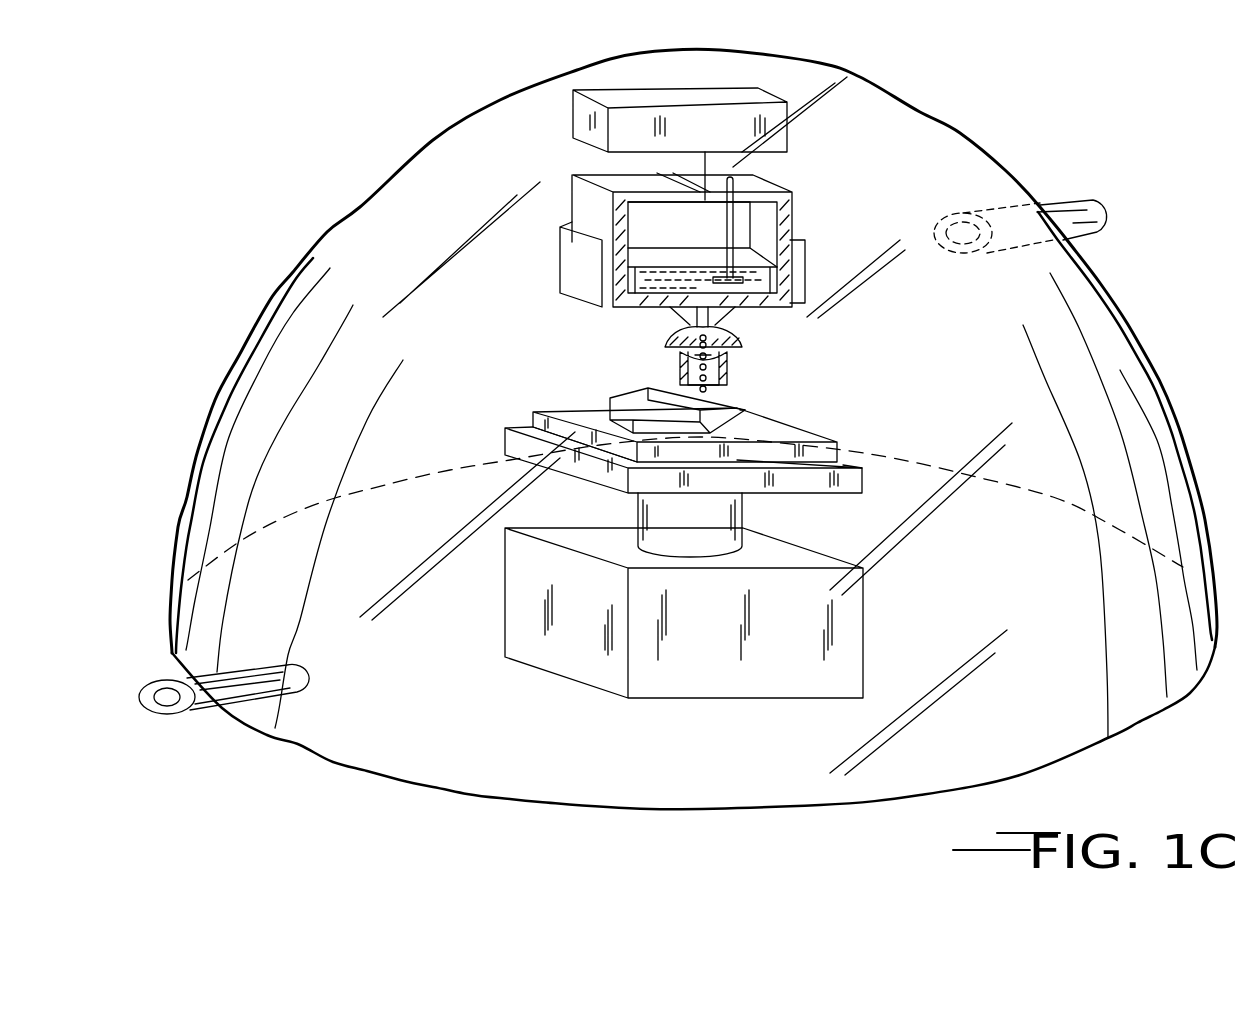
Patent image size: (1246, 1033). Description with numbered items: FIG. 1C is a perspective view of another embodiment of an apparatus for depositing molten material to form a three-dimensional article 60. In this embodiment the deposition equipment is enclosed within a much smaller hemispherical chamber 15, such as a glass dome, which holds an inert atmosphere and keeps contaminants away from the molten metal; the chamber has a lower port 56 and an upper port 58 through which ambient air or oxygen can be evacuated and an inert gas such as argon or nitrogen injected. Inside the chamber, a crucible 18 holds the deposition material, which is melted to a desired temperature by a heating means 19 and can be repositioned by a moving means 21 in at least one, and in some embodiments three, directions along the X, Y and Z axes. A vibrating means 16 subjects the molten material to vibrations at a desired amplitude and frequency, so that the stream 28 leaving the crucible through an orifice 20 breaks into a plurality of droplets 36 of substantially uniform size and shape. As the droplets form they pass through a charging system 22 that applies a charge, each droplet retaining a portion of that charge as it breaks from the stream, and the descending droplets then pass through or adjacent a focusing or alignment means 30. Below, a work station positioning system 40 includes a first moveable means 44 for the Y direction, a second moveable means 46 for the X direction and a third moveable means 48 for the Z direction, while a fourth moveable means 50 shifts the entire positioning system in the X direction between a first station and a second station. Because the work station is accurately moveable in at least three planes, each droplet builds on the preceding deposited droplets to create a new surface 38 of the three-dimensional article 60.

The chamber 15 is at (425, 138).
The moving means 21 is at (608, 106).
The vibrating means 16 is at (740, 222).
The crucible 18 is at (792, 206).
The heating means 19 is at (558, 270).
The stream 28 is at (680, 305).
The charging system 22 is at (667, 332).
The orifice 20 is at (745, 328).
The droplets 36 is at (730, 351).
The alignment means 30 is at (668, 368).
The three-dimensional article 60 is at (740, 402).
The new surface 38 is at (770, 413).
The first moveable means 44 is at (533, 414).
The work station positioning system 40 is at (853, 462).
The second moveable means 46 is at (858, 505).
The third moveable means 48 is at (747, 510).
The fourth moveable means 50 is at (866, 618).
The lower port 56 is at (190, 714).
The upper port 58 is at (1078, 200).